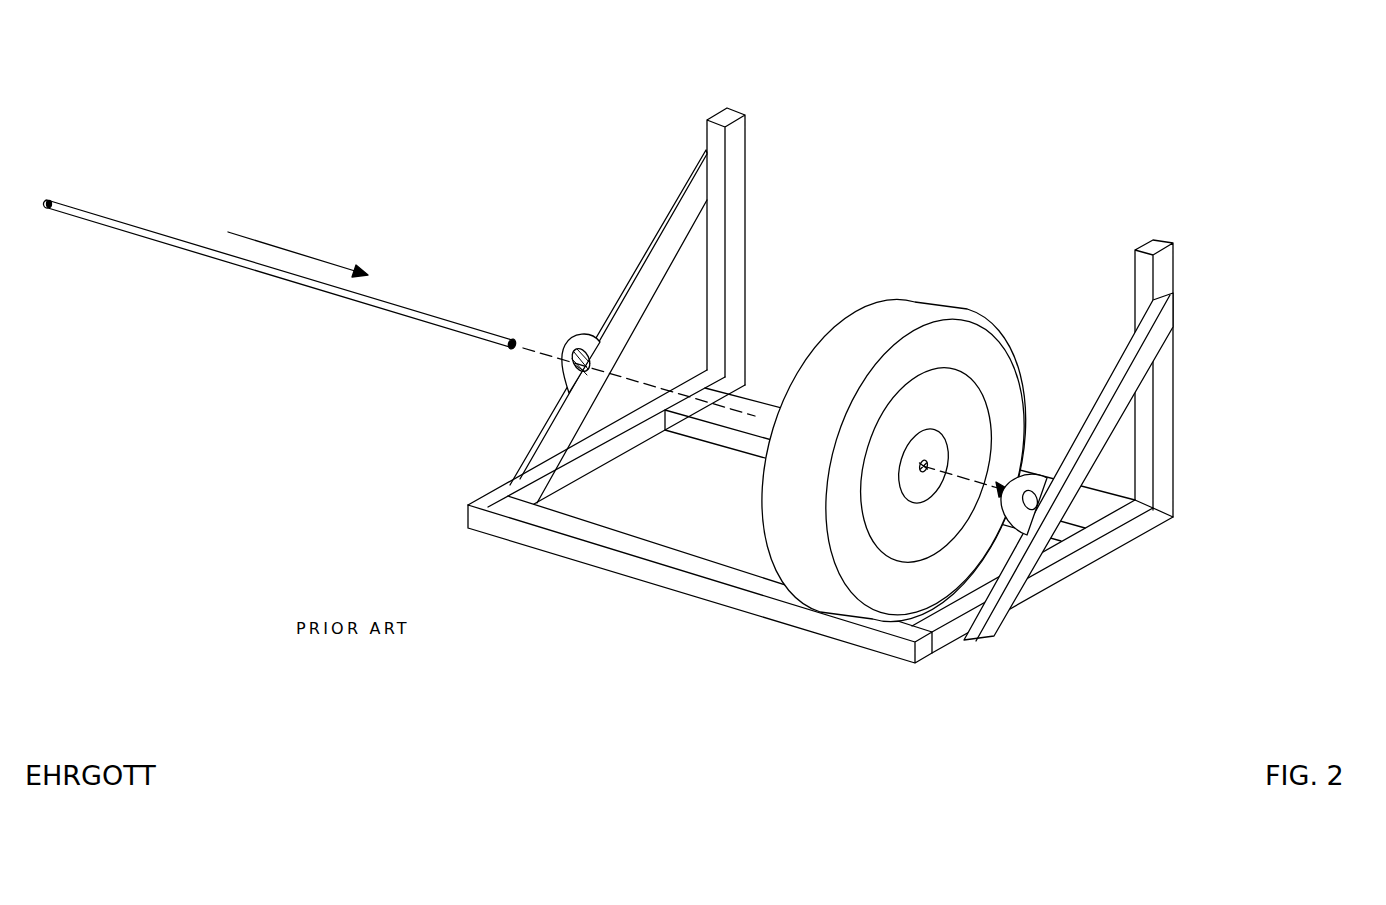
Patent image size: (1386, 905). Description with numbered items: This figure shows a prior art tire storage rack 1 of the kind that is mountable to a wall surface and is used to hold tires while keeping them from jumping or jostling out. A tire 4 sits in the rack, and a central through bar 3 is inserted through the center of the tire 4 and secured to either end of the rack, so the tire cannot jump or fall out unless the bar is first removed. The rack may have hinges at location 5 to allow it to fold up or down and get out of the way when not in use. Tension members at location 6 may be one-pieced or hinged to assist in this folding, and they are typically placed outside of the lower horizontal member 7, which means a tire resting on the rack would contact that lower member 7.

The prior art tire storage rack 1 is at (735, 107).
The central through bar 3 is at (282, 278).
The tire 4 is at (912, 306).
The hinge location 5 is at (1165, 522).
The tension member location 6 is at (993, 628).
The lower horizontal member 7 is at (1068, 570).